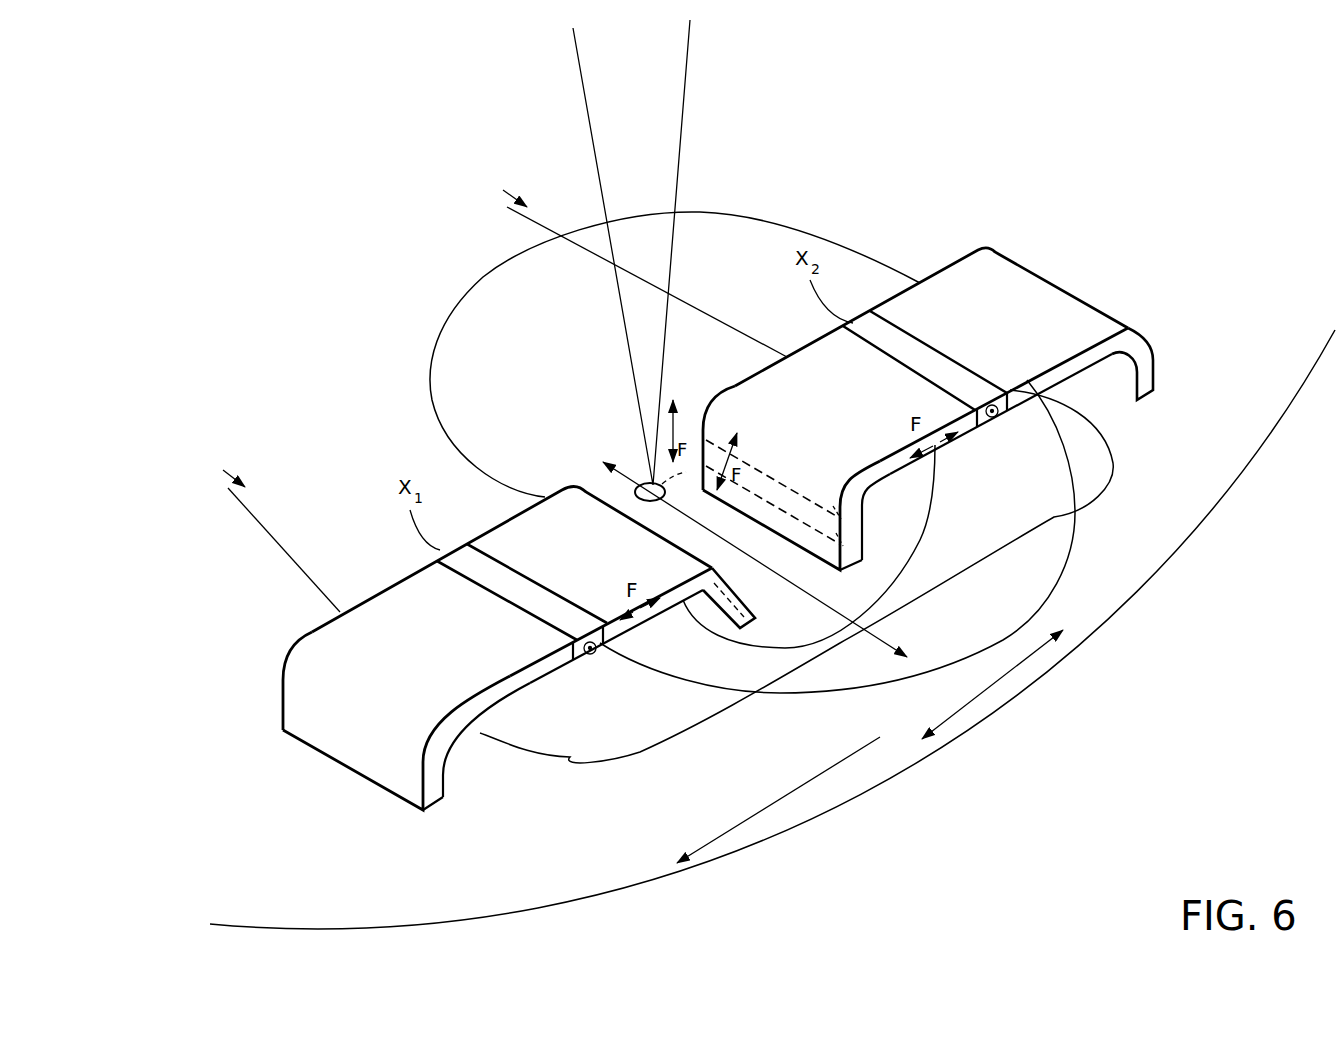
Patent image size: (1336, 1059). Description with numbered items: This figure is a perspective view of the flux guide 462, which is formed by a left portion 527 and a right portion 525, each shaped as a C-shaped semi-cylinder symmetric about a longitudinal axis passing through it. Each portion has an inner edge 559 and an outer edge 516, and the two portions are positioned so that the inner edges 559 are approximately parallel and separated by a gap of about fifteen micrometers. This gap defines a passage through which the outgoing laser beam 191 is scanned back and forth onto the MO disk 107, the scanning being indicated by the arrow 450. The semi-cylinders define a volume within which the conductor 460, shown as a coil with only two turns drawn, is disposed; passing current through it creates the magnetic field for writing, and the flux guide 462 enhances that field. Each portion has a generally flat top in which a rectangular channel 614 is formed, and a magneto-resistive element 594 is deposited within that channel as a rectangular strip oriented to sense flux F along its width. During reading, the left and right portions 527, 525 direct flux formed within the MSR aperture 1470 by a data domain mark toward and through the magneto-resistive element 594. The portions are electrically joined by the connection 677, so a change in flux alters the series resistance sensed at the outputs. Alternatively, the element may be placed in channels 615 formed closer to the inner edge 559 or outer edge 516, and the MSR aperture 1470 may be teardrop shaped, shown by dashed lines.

The MO disk 107 is at (1288, 418).
The outgoing laser beam 191 is at (683, 72).
The arrow 450 is at (815, 598).
The conductor 460 is at (267, 532).
The flux guide 462 is at (1101, 118).
The outer edge 516 is at (433, 800).
The right portion 525 is at (1050, 297).
The left portion 527 is at (375, 613).
The inner edge 559 is at (747, 632).
The magneto-resistive element 594 is at (457, 557).
The channel 614 is at (572, 660).
The channels 615 is at (790, 483).
The connection 677 is at (1050, 465).
The MSR aperture 1470 is at (647, 485).